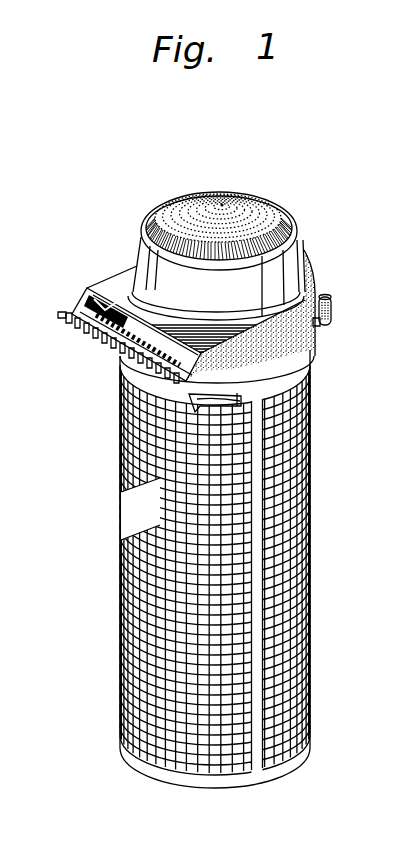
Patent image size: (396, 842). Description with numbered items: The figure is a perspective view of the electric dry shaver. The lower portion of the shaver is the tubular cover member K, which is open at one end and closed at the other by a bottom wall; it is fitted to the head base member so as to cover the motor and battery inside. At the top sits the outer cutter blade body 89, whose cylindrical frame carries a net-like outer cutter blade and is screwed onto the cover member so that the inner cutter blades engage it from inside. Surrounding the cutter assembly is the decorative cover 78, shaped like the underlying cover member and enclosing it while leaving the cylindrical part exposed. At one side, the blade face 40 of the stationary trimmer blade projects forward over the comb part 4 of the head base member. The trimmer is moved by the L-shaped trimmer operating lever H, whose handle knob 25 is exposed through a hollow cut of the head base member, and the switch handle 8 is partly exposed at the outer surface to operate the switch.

The comb part 4 is at (82, 326).
The switch handle 8 is at (190, 405).
The handle knob 25 is at (334, 303).
The blade face 40 is at (113, 345).
The decorative cover 78 is at (268, 347).
The outer cutter blade body 89 is at (345, 239).
The trimmer operating lever H is at (317, 328).
The tubular cover member K is at (311, 507).